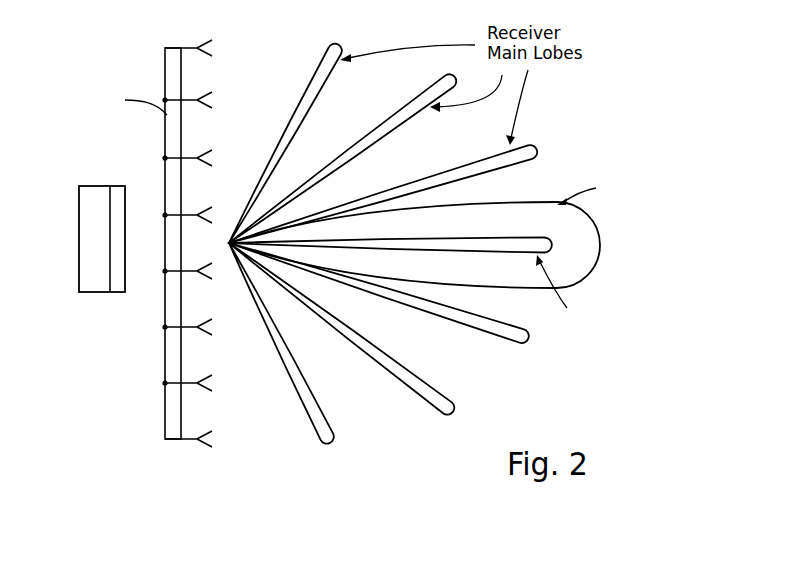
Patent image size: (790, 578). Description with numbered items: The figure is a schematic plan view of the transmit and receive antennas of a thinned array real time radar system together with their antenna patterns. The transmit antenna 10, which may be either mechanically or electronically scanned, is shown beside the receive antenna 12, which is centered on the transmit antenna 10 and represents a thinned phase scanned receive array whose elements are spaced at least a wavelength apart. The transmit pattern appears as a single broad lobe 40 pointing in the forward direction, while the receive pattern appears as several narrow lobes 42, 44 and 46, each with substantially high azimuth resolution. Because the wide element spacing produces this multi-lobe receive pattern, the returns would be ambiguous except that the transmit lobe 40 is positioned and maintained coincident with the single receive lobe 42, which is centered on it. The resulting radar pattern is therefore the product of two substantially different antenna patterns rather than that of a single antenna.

The transmit antenna 10 is at (79, 242).
The receive antenna 12 is at (177, 50).
The transmit lobe 40 is at (475, 205).
The receive lobe 42 is at (500, 242).
The receive lobe 44 is at (433, 175).
The receive lobe 46 is at (375, 133).